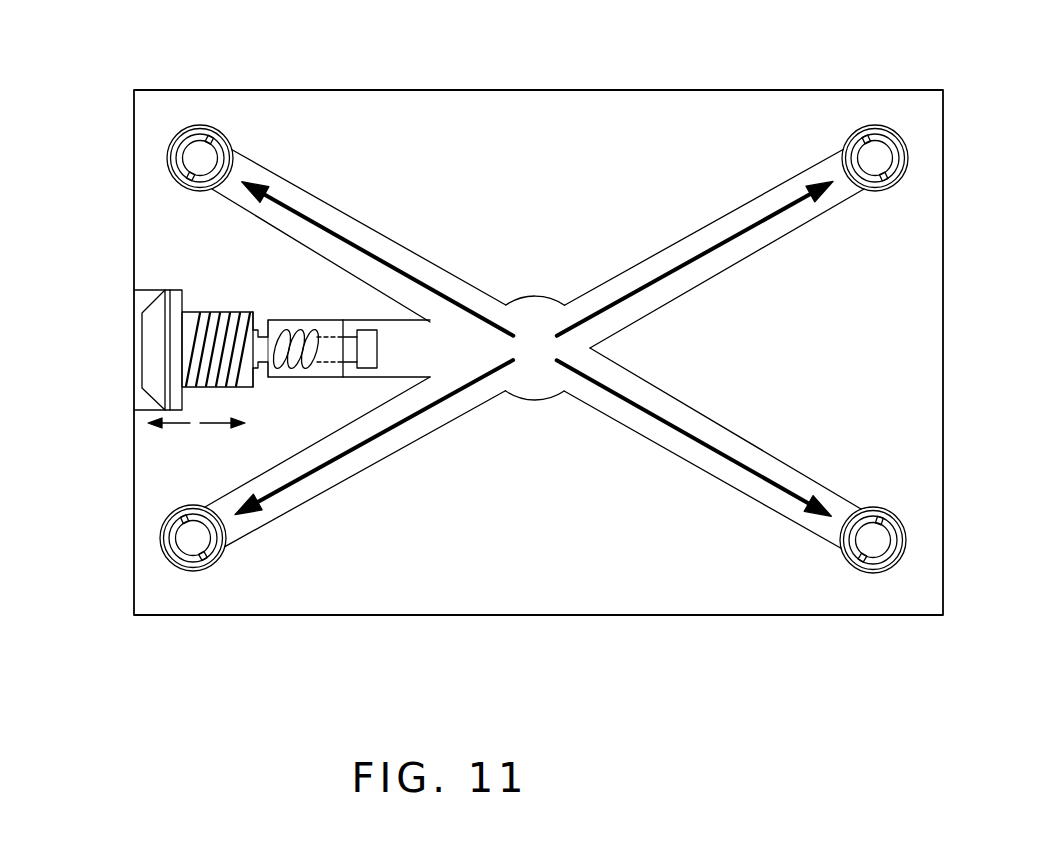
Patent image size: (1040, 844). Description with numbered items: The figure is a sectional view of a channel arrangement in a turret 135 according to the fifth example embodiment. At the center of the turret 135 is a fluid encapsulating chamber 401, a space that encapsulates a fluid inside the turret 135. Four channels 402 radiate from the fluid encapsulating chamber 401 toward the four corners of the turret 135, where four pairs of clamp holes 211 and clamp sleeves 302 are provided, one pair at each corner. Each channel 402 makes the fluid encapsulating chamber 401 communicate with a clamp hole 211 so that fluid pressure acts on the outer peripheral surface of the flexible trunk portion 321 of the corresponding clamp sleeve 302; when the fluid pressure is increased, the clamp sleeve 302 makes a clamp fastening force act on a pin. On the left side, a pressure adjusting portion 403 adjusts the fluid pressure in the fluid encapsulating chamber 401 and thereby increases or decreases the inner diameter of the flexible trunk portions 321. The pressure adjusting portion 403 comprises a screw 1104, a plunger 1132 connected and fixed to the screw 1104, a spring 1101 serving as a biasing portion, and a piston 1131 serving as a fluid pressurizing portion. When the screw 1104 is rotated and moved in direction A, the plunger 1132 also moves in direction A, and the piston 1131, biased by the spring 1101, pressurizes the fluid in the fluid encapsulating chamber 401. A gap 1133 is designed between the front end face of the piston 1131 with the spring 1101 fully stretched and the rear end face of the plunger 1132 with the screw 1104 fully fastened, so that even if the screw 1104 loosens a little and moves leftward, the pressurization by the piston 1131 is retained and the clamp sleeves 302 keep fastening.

The turret 135 is at (700, 607).
The clamp hole 211 is at (167, 160).
The clamp sleeve 302 is at (533, 355).
The flexible trunk portion 321 is at (232, 158).
The fluid encapsulating chamber 401 is at (542, 397).
The channel 402 is at (350, 220).
The pressure adjusting portion 403 is at (282, 346).
The spring 1101 is at (307, 367).
The screw 1104 is at (212, 318).
The piston 1131 is at (330, 322).
The plunger 1132 is at (367, 342).
The gap 1133 is at (348, 378).